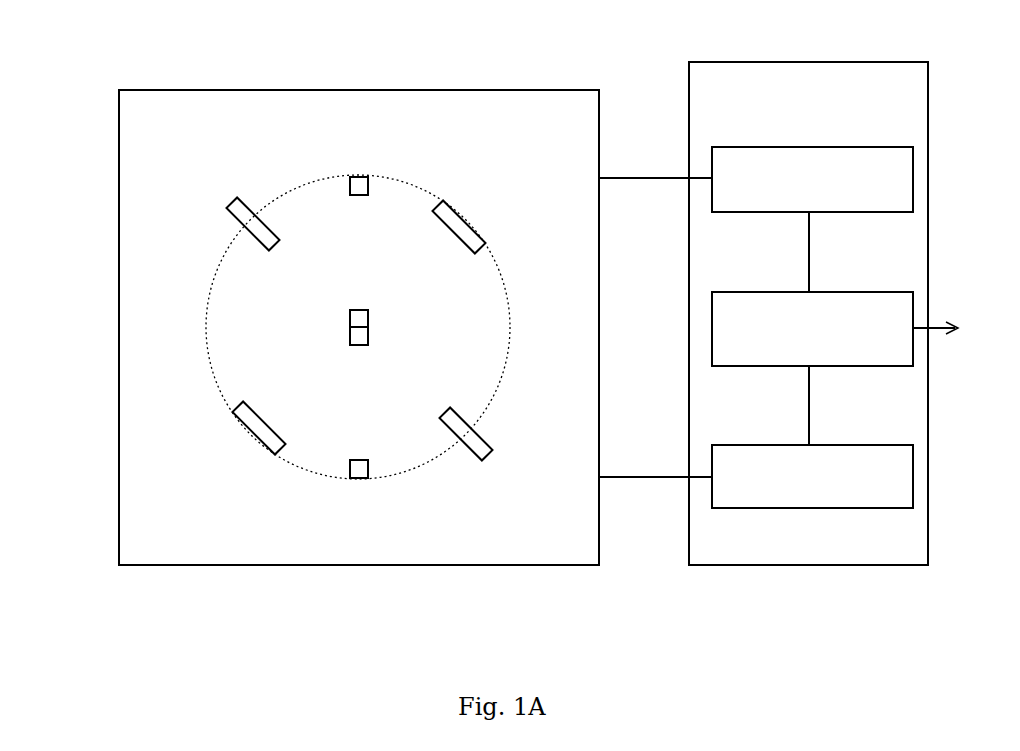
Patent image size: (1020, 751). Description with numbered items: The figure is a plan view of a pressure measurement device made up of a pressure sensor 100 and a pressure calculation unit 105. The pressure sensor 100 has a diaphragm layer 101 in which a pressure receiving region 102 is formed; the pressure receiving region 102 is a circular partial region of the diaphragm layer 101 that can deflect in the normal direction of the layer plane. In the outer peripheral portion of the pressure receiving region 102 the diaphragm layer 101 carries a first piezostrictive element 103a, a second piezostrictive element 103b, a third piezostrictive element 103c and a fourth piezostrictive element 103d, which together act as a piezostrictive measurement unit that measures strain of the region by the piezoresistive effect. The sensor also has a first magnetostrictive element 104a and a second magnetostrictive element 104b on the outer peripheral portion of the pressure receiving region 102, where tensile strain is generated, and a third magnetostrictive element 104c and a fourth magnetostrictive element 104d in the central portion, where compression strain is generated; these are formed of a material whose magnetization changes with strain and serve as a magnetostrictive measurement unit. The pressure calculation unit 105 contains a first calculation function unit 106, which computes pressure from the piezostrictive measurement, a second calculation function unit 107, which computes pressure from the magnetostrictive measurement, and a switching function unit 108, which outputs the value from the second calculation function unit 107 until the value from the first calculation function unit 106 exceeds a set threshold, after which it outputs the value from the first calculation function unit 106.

The pressure sensor 100 is at (326, 66).
The diaphragm layer 101 is at (600, 125).
The pressure receiving region 102 is at (490, 283).
The first piezostrictive element 103a is at (246, 229).
The second piezostrictive element 103b is at (246, 431).
The third piezostrictive element 103c is at (484, 437).
The fourth piezostrictive element 103d is at (482, 236).
The first magnetostrictive element 104a is at (369, 177).
The second magnetostrictive element 104b is at (368, 478).
The third magnetostrictive element 104c is at (350, 320).
The fourth magnetostrictive element 104d is at (369, 333).
The pressure calculation unit 105 is at (808, 566).
The first calculation function unit 106 is at (864, 147).
The second calculation function unit 107 is at (864, 445).
The switching function unit 108 is at (864, 292).